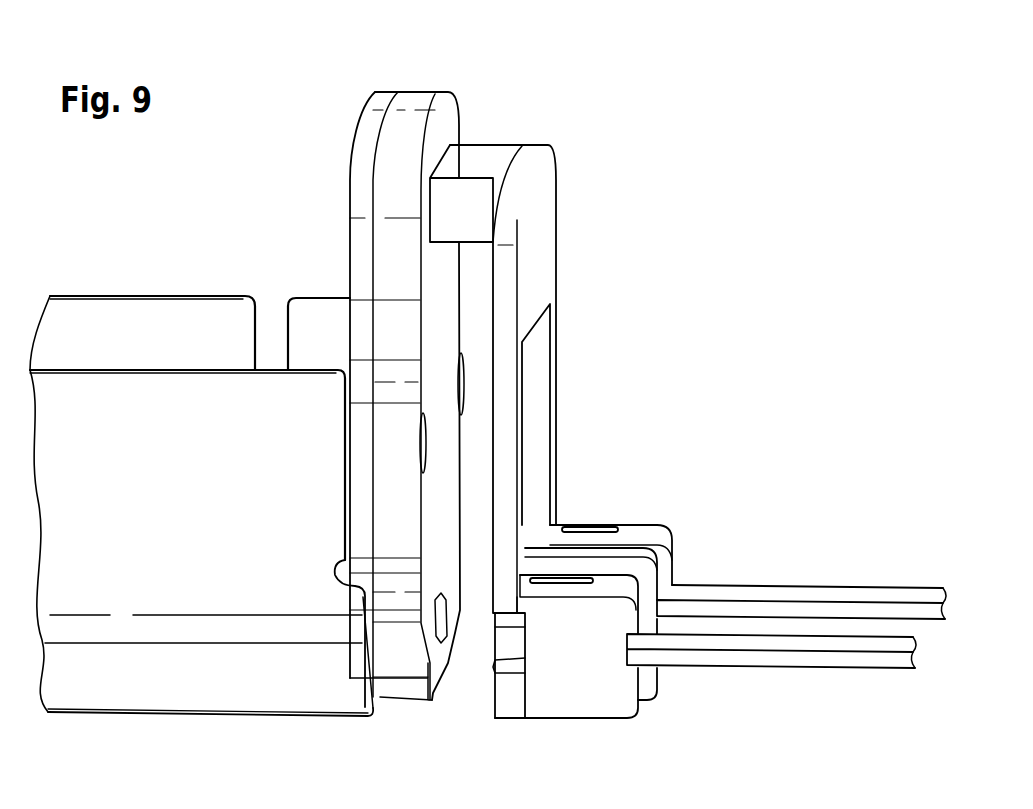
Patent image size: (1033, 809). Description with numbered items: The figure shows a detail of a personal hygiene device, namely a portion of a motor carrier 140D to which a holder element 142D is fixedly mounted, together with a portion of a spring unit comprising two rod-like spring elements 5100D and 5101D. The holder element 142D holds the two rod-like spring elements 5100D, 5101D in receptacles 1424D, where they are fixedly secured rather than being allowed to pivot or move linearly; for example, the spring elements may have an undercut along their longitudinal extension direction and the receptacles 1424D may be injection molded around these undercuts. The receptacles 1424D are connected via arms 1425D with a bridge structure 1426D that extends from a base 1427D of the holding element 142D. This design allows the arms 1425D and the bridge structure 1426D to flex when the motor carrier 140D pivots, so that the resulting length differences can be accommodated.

The motor carrier 140D is at (147, 325).
The holder element 142D is at (560, 378).
The receptacles 1424D is at (643, 532).
The arms 1425D is at (522, 433).
The bridge structure 1426D is at (502, 157).
The base 1427D is at (417, 102).
The rod-like spring element 5100D is at (812, 658).
The rod-like spring element 5101D is at (807, 593).